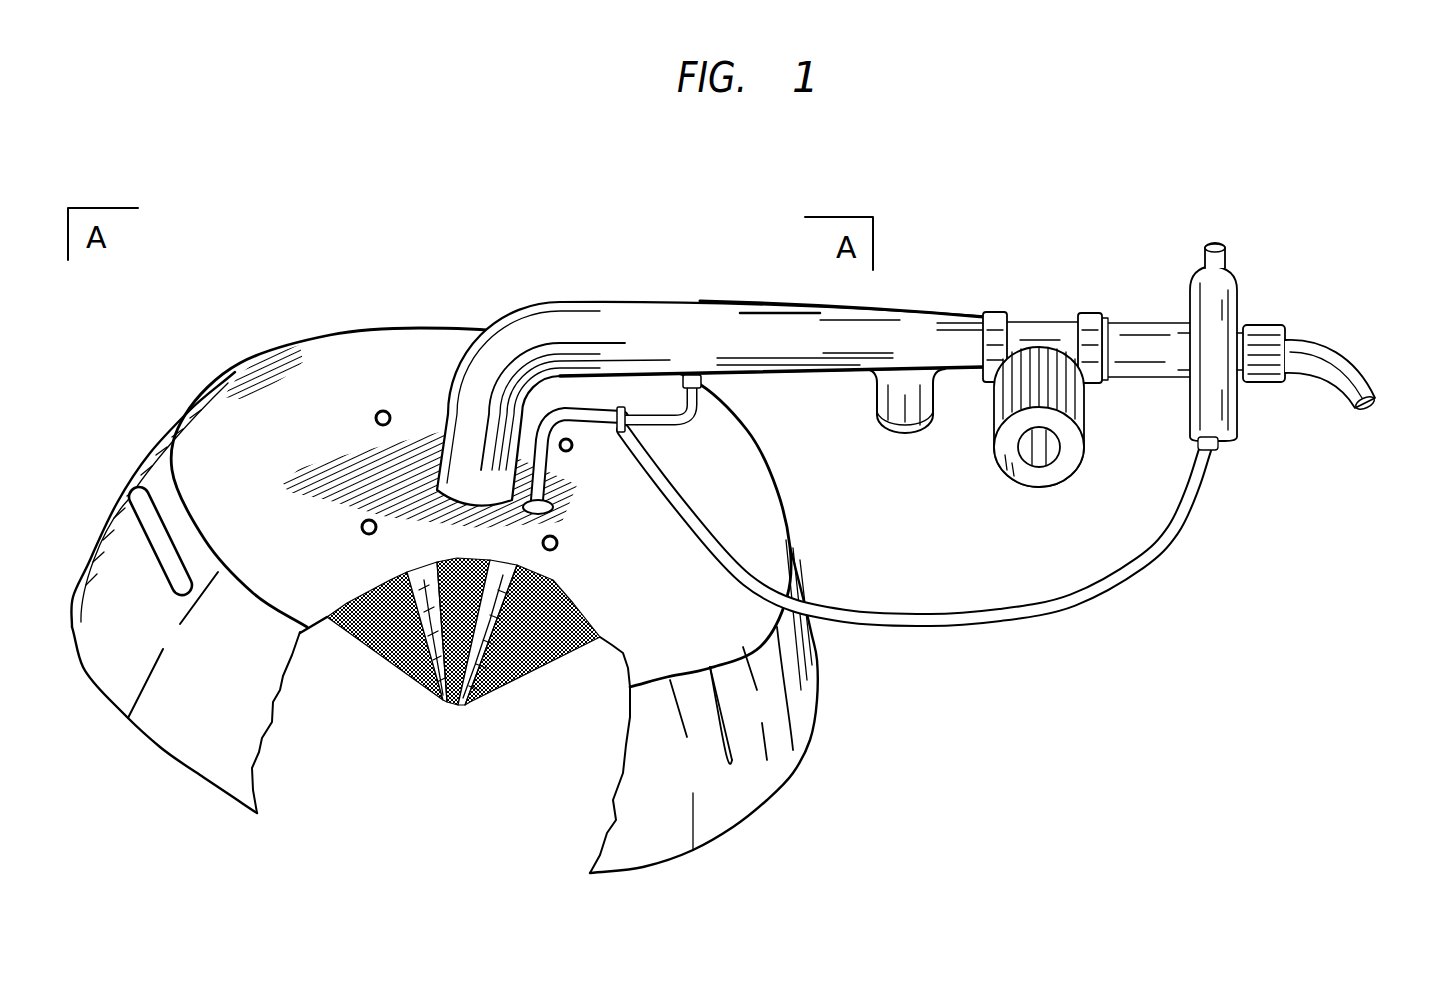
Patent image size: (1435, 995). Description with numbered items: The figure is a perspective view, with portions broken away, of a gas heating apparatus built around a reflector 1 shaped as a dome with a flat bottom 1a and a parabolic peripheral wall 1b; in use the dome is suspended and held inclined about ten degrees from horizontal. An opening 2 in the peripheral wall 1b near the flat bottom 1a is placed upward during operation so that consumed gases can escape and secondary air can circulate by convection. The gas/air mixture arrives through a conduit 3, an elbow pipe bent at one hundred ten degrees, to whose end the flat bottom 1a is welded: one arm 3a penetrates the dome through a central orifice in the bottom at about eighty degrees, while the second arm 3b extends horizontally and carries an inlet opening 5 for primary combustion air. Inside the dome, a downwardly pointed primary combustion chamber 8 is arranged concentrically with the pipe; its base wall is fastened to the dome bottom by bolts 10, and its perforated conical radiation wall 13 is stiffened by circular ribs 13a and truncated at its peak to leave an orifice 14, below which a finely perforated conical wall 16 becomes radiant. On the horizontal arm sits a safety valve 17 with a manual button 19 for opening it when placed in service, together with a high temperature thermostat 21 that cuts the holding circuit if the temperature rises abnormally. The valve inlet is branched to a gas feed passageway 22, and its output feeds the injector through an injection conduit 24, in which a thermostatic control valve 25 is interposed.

The reflector 1 is at (827, 737).
The flat bottom 1a is at (710, 597).
The parabolic peripheral wall 1b is at (673, 823).
The opening 2 is at (133, 513).
The conduit 3 is at (484, 292).
The first arm 3a is at (470, 410).
The second arm 3b is at (563, 332).
The inlet opening 5 is at (903, 420).
The primary combustion chamber 8 is at (392, 672).
The bolts 10 is at (378, 410).
The conical radiation wall 13 is at (391, 735).
The circular ribs 13a is at (591, 755).
The orifice 14 is at (447, 708).
The conical wall 16 is at (468, 712).
The safety valve 17 is at (1237, 291).
The manual button 19 is at (1213, 242).
The high temperature thermostat 21 is at (700, 387).
The gas feed passageway 22 is at (1328, 360).
The injection conduit 24 is at (1187, 332).
The control valve 25 is at (1037, 473).